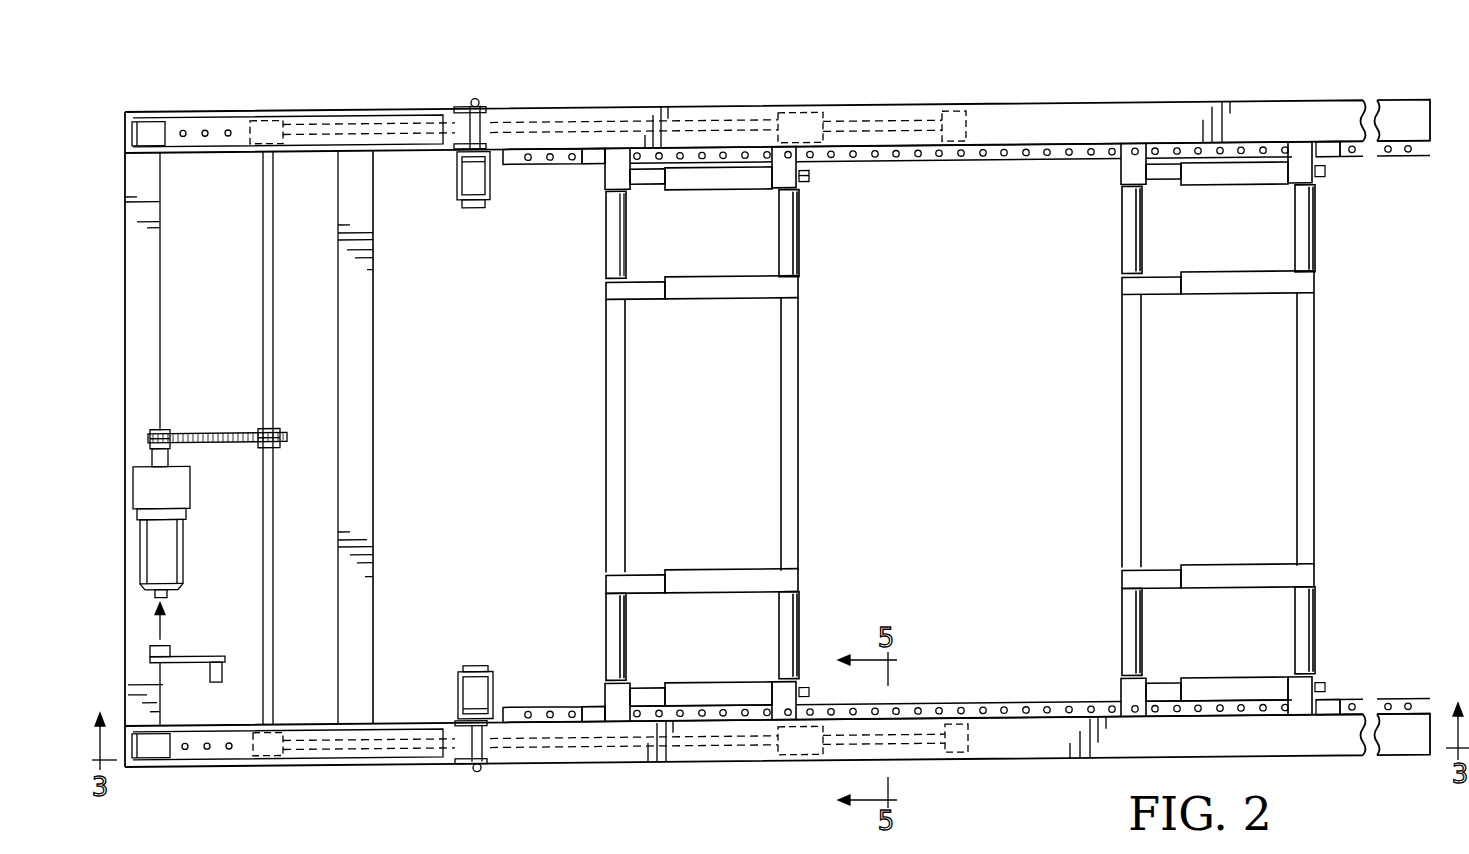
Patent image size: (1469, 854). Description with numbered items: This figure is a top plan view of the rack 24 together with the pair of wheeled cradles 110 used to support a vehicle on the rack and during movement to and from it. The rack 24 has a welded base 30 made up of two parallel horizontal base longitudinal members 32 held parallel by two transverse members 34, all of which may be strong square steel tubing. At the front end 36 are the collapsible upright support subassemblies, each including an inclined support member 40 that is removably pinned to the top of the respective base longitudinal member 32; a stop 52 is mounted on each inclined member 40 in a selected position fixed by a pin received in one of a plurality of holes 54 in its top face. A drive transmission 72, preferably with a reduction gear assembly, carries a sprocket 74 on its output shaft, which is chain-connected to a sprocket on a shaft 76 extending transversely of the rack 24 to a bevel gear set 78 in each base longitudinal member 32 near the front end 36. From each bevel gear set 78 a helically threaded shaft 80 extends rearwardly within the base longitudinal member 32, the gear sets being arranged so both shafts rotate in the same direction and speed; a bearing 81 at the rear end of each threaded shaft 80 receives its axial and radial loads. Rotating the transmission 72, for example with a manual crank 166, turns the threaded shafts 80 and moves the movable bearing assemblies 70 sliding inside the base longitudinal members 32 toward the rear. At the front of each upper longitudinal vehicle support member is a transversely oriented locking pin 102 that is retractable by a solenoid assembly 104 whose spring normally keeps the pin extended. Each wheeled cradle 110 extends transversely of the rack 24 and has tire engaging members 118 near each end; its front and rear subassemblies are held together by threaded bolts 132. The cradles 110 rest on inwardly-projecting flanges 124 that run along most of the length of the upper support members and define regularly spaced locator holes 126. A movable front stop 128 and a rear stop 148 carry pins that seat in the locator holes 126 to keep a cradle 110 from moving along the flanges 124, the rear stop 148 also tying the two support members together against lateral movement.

The rack 24 is at (722, 80).
The base 30 is at (381, 493).
The base longitudinal member 32 is at (454, 160).
The transverse member 34 is at (142, 272).
The front end 36 is at (121, 353).
The inclined support member 40 is at (381, 741).
The stop 52 is at (153, 758).
The holes 54 is at (230, 752).
The movable bearing assembly 70 is at (798, 119).
The drive transmission 72 is at (185, 569).
The sprocket 74 is at (165, 431).
The shaft 76 is at (276, 576).
The bevel gear set 78 is at (250, 128).
The threaded shaft 80 is at (347, 760).
The bearing 81 is at (967, 136).
The locking pin 102 is at (479, 108).
The solenoid assembly 104 is at (478, 215).
The wheeled cradle 110 is at (802, 458).
The tire engaging member 118 is at (627, 237).
The flange 124 is at (905, 170).
The locator holes 126 is at (1068, 170).
The movable front stop 128 is at (598, 169).
The threaded bolt 132 is at (807, 188).
The rear stop 148 is at (1328, 165).
The manual crank 166 is at (207, 656).